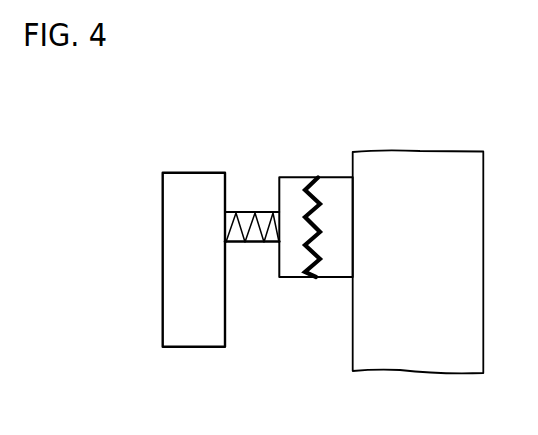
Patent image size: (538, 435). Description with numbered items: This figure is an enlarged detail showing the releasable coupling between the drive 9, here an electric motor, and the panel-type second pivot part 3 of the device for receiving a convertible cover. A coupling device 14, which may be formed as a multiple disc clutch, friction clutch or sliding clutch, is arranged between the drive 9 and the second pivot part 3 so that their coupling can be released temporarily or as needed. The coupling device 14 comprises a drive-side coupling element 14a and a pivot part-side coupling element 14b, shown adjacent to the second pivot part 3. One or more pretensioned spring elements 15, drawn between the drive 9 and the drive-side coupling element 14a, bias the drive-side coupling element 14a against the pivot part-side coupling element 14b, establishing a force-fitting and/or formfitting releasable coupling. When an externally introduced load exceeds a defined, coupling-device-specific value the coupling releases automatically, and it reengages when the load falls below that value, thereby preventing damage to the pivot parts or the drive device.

The second pivot part 3 is at (406, 179).
The drive 9 is at (162, 302).
The coupling device 14 is at (292, 257).
The drive-side coupling element 14a is at (286, 188).
The pivot part-side coupling element 14b is at (337, 262).
The spring element 15 is at (240, 212).